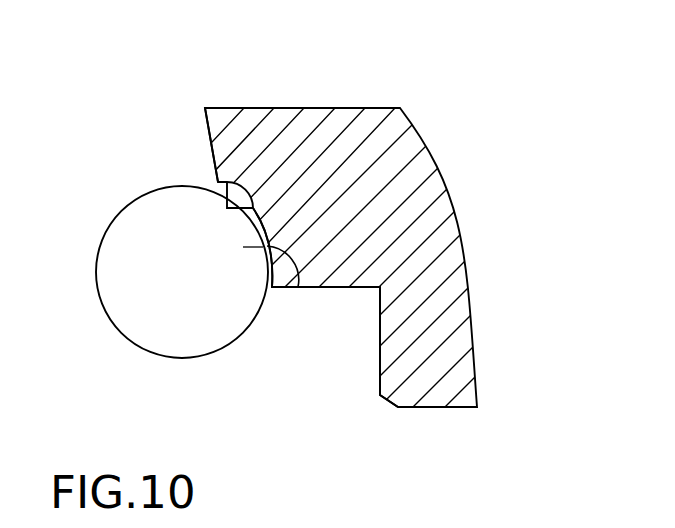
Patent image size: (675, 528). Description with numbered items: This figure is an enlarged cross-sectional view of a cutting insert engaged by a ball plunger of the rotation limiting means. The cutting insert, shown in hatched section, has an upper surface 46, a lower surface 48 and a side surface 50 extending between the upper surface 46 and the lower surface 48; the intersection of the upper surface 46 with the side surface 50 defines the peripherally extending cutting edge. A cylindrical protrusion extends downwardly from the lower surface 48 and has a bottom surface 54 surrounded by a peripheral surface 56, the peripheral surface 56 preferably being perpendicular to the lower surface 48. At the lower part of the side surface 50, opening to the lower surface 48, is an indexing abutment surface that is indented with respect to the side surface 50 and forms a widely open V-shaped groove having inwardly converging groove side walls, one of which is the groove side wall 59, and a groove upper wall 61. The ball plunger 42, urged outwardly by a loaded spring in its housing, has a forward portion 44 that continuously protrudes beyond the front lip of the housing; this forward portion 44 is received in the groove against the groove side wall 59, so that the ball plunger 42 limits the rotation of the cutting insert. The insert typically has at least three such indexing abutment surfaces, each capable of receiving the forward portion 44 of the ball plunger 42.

The ball plunger 42 is at (122, 278).
The forward portion 44 is at (300, 287).
The upper surface 46 is at (288, 108).
The lower surface 48 is at (330, 287).
The side surface 50 is at (203, 133).
The bottom surface 54 is at (433, 408).
The peripheral surface 56 is at (380, 360).
The groove side wall 59 is at (273, 281).
The groove upper wall 61 is at (215, 186).